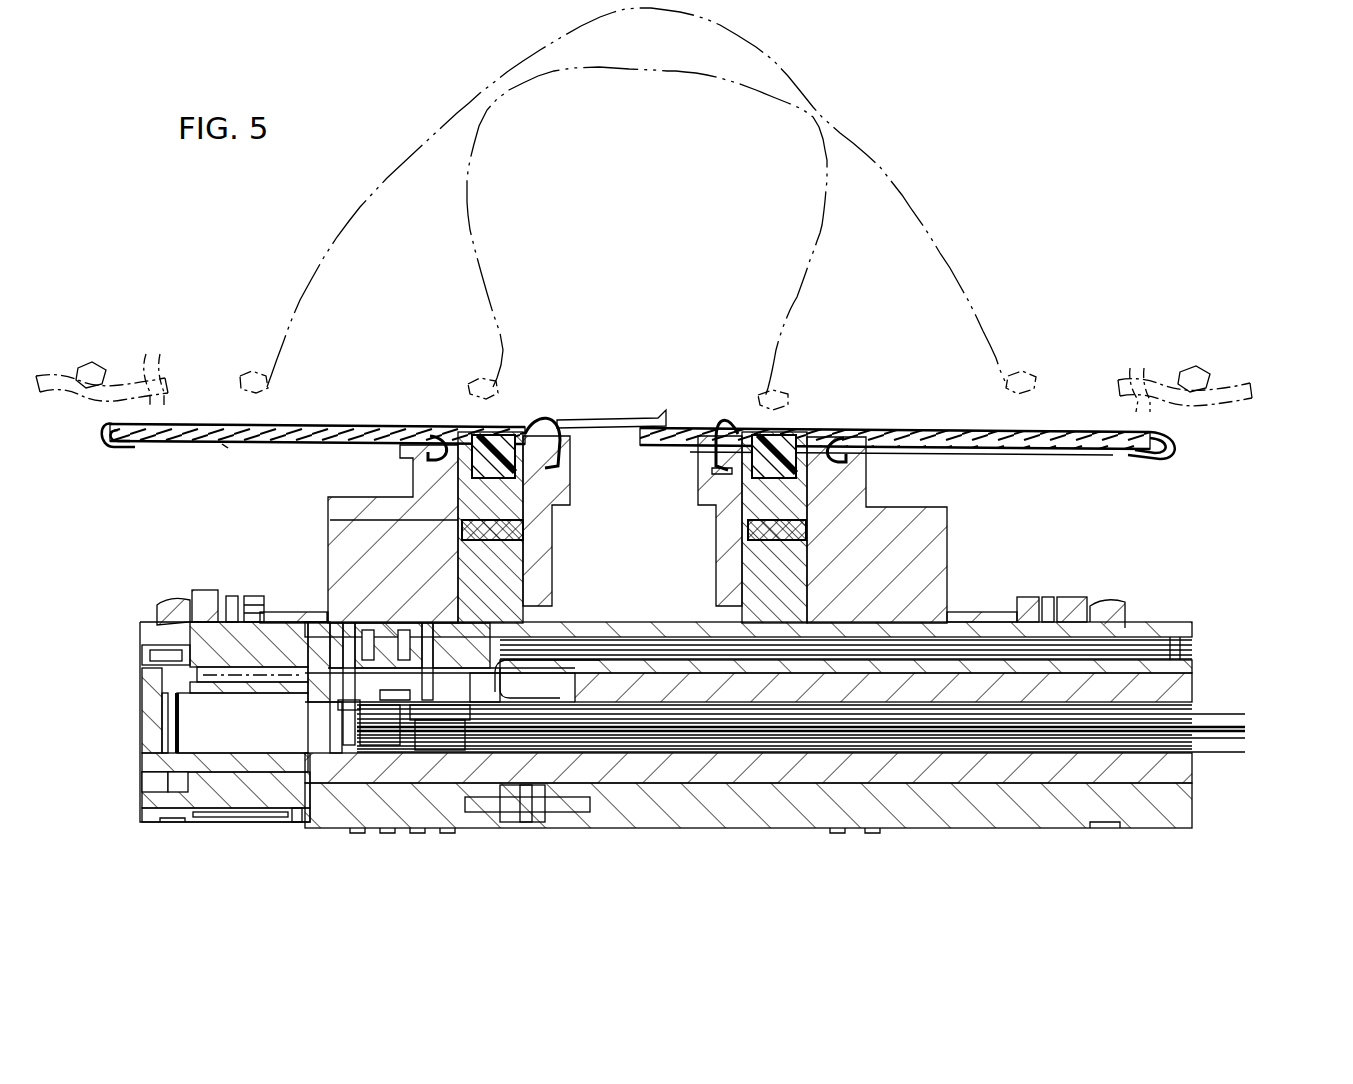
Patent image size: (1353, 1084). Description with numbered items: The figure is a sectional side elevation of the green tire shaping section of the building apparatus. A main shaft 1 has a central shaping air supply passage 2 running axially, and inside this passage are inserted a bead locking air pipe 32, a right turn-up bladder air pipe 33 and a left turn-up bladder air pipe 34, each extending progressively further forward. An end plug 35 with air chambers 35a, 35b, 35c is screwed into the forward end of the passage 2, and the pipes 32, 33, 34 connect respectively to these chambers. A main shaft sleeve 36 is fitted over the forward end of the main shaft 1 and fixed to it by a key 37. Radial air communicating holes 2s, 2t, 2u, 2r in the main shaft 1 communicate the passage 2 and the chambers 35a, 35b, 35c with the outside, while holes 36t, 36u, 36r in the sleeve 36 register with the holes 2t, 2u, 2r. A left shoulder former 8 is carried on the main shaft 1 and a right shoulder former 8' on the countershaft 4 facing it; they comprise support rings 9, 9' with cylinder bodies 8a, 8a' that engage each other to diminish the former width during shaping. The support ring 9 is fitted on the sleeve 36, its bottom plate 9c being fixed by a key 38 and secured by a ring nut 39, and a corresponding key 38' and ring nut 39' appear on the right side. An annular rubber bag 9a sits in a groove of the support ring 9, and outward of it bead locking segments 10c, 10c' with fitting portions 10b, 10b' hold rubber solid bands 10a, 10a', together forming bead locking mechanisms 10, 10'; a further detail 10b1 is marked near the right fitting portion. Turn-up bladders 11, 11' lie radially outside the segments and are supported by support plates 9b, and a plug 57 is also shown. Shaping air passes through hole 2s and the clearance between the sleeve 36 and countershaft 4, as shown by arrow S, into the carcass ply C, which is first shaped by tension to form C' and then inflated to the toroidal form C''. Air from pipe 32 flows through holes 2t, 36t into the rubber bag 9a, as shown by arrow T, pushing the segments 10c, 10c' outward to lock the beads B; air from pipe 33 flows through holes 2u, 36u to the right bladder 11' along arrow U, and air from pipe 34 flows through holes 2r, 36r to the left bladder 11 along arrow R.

The main shaft 1 is at (1185, 776).
The shaping air supply passage 2 is at (1170, 713).
The air communicating hole 2r is at (342, 669).
The air communicating hole 2s is at (540, 702).
The air communicating hole 2t is at (505, 702).
The air communicating hole 2u is at (366, 745).
The countershaft 4 is at (1170, 632).
The left shoulder former 8 is at (638, 201).
The right shoulder former 8' is at (701, 238).
The cylinder body 8a is at (595, 400).
The cylinder body 8a' is at (699, 387).
The support ring 9 is at (364, 534).
The support ring 9' is at (919, 530).
The annular rubber bag 9a is at (360, 523).
The support plate 9b is at (222, 453).
The bottom plate 9c is at (286, 610).
The bead locking mechanism 10 is at (571, 521).
The bead locking mechanism 10' is at (693, 521).
The rubber solid band 10a is at (389, 467).
The rubber solid band 10a' is at (892, 463).
The fitting portion 10b is at (547, 527).
The fitting portion 10b' is at (717, 527).
The clamp insulator lip 10b1 is at (728, 440).
The bead locking segment 10c is at (548, 524).
The bead locking segment 10c' is at (721, 530).
The left turn-up bladder 11 is at (283, 444).
The right turn-up bladder 11' is at (907, 422).
The bead locking air pipe 32 is at (1228, 715).
The right turn-up bladder air pipe 33 is at (1245, 731).
The left turn-up bladder air pipe 34 is at (1245, 753).
The end plug 35 is at (318, 734).
The air chamber 35a is at (445, 750).
The air chamber 35b is at (375, 745).
The air chamber 35c is at (350, 746).
The main shaft sleeve 36 is at (210, 647).
The air communicating hole 36r is at (230, 676).
The air communicating hole 36t is at (500, 629).
The air communicating hole 36u is at (388, 641).
The key 37 is at (200, 679).
The key 38 is at (139, 578).
The second retainer 38' is at (1145, 585).
The ring nut 39 is at (208, 576).
The second stop 39' is at (1071, 582).
The plug 57 is at (400, 637).
The bead B is at (84, 366).
The carcass ply C is at (646, 368).
The carcass shaped form C' is at (884, 128).
The toroidal carcass form C'' is at (858, 216).
The arrow R is at (336, 623).
The arrow S is at (536, 680).
The arrow T is at (500, 763).
The arrow U is at (352, 623).